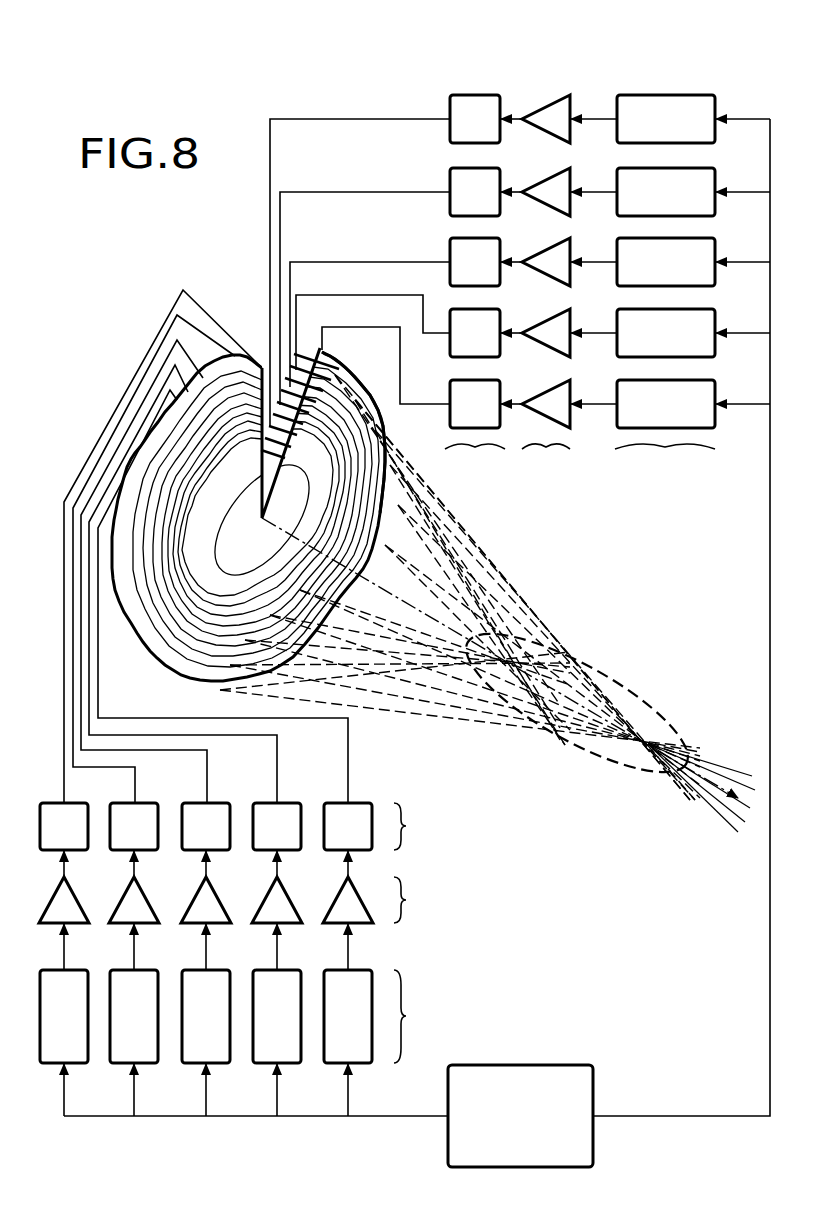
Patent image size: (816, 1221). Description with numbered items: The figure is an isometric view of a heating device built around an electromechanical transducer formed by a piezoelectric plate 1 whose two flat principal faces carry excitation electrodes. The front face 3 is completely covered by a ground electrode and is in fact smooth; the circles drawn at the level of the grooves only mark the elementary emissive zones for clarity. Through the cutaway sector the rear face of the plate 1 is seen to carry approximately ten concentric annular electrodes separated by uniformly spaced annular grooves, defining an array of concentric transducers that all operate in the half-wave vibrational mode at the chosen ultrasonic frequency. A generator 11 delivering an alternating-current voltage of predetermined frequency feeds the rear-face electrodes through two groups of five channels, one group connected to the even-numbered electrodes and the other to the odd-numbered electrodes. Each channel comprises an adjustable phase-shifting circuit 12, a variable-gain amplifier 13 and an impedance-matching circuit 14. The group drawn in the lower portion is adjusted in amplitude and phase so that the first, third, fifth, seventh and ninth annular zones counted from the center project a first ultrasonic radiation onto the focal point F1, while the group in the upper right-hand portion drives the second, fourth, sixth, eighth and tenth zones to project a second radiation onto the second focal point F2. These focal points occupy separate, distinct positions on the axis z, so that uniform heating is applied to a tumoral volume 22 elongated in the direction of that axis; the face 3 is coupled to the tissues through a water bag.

The piezoelectric plate 1 is at (135, 650).
The front face 3 is at (364, 380).
The generator 11 is at (527, 1065).
The adjustable phase-shifting circuit 12 is at (430, 1020).
The variable-gain amplifier 13 is at (428, 902).
The impedance-matching circuit 14 is at (428, 833).
The tumoral volume 22 is at (660, 780).
The first focal point F1 is at (530, 640).
The second focal point F2 is at (648, 740).
The axis z is at (437, 633).